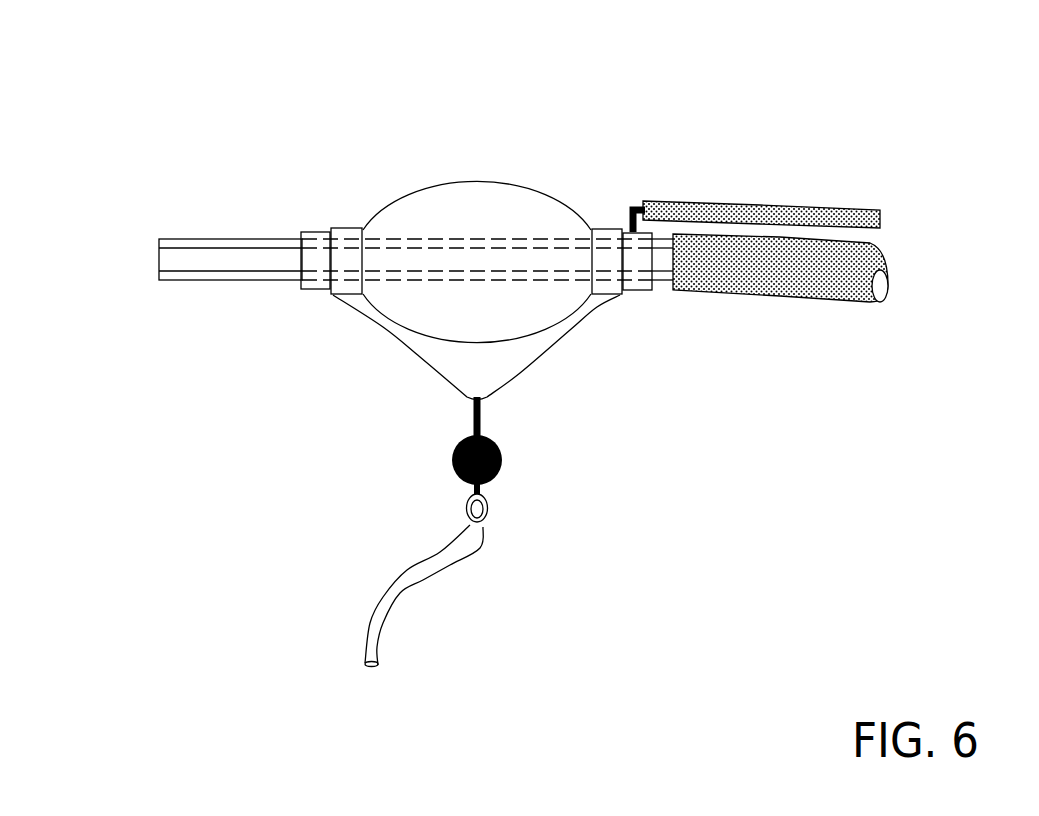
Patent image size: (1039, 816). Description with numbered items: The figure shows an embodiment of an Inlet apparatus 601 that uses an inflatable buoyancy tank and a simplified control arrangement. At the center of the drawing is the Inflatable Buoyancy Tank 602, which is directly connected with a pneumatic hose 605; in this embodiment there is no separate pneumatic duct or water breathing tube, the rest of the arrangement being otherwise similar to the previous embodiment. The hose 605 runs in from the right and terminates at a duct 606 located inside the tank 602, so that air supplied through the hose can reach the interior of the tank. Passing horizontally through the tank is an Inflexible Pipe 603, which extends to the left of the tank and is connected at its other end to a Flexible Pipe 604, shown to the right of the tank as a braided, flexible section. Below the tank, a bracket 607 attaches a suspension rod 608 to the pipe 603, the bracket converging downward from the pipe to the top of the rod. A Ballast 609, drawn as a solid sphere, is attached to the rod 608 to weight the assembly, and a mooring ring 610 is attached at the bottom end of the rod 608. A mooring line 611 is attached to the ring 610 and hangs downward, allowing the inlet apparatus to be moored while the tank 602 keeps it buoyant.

The Inlet apparatus 601 is at (405, 77).
The Inflatable Buoyancy Tank 602 is at (393, 202).
The Inflexible Pipe 603 is at (200, 238).
The Flexible Pipe 604 is at (728, 292).
The pneumatic hose 605 is at (723, 200).
The duct 606 is at (580, 225).
The bracket 607 is at (380, 332).
The suspension rod 608 is at (481, 418).
The Ballast 609 is at (453, 468).
The mooring ring 610 is at (487, 512).
The mooring line 611 is at (366, 628).